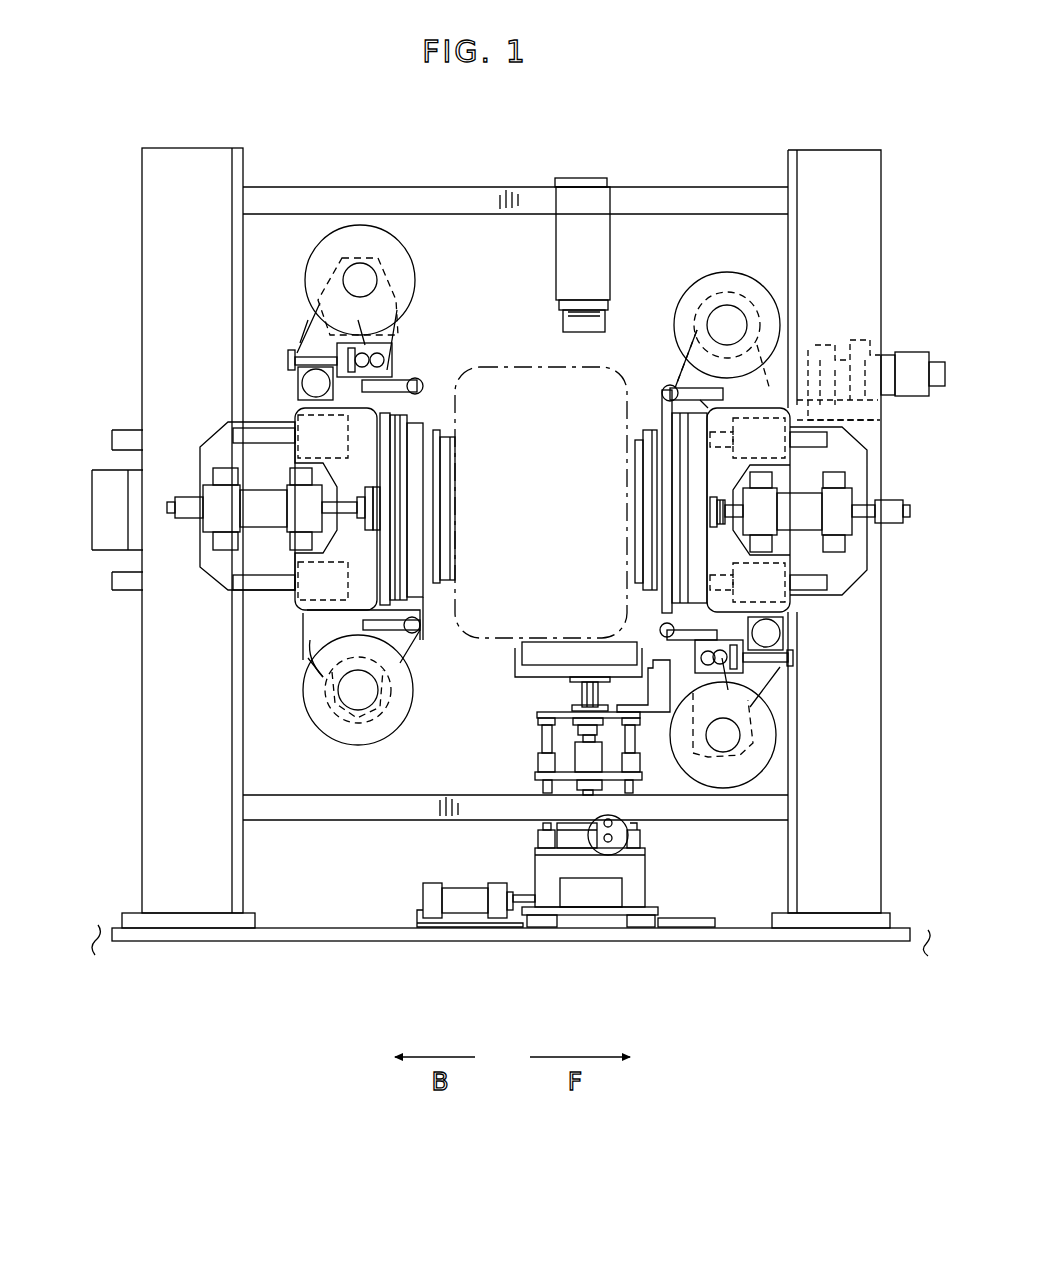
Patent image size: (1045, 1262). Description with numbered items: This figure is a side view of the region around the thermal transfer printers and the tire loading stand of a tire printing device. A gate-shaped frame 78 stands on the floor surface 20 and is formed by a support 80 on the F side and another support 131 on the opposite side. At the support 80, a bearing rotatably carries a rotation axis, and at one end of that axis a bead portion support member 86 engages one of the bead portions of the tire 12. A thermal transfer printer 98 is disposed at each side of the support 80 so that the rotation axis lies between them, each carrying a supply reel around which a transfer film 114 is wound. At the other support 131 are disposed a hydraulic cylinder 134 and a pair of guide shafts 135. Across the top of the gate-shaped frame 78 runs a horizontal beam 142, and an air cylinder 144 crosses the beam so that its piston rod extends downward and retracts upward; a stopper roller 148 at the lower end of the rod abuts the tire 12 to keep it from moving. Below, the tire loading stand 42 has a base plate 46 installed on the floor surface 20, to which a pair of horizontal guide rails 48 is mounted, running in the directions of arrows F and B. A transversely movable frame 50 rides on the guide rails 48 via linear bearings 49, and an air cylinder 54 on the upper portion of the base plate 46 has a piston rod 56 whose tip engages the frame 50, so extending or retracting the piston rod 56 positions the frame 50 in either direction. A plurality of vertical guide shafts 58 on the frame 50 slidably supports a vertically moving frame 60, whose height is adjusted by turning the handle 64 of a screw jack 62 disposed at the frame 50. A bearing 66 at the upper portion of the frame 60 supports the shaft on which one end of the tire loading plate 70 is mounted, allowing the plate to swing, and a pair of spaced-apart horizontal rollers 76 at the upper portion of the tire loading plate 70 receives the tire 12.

The support 131 is at (213, 148).
The gate-shaped frame 78 is at (843, 150).
The support 80 is at (885, 232).
The horizontal beam 142 is at (483, 187).
The air cylinder 144 is at (600, 270).
The stopper roller 148 is at (600, 330).
The tire 12 is at (517, 367).
The thermal transfer printer 98 is at (405, 245).
The transfer film 114 is at (410, 360).
The hydraulic cylinder 134 is at (128, 478).
The guide shafts 135 is at (143, 425).
The bead portion support member 86 is at (441, 438).
The tire loading stand 42 is at (518, 635).
The rollers 76 is at (552, 642).
The tire loading plate 70 is at (520, 660).
The bearing 66 is at (585, 692).
The vertically moving frame 60 is at (540, 715).
The guide shafts 58 is at (540, 752).
The base plate 46 is at (290, 915).
The floor surface 20 is at (922, 925).
The air cylinder 54 is at (423, 895).
The piston rod 56 is at (520, 895).
The screw jack 62 is at (538, 840).
The handle 64 is at (608, 850).
The transversely movable frame 50 is at (660, 903).
The linear bearings 49 is at (545, 928).
The guide rails 48 is at (715, 920).